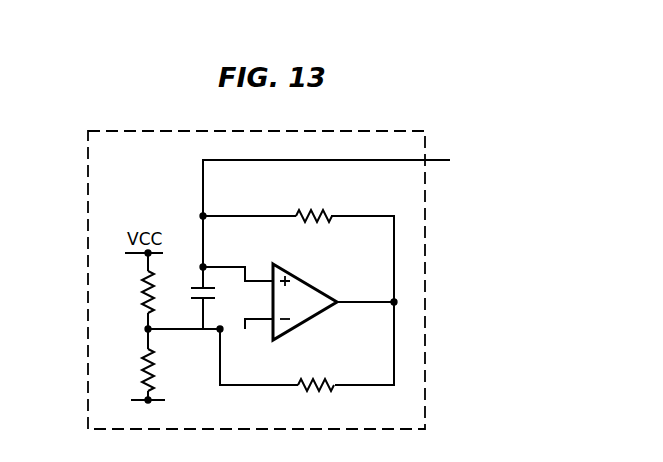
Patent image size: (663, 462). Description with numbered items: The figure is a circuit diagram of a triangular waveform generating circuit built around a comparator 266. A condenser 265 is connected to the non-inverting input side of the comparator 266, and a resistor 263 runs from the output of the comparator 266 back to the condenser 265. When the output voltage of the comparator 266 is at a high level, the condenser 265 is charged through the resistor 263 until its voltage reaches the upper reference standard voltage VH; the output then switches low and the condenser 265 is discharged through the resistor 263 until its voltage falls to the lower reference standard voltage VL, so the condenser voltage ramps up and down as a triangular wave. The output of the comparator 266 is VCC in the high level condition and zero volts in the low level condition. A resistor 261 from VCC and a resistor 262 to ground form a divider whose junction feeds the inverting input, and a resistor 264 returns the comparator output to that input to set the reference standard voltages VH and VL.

The resistor 261 is at (144, 300).
The resistor 262 is at (144, 372).
The resistor 263 is at (305, 210).
The resistor 264 is at (304, 390).
The condenser 265 is at (208, 287).
The comparator 266 is at (305, 280).